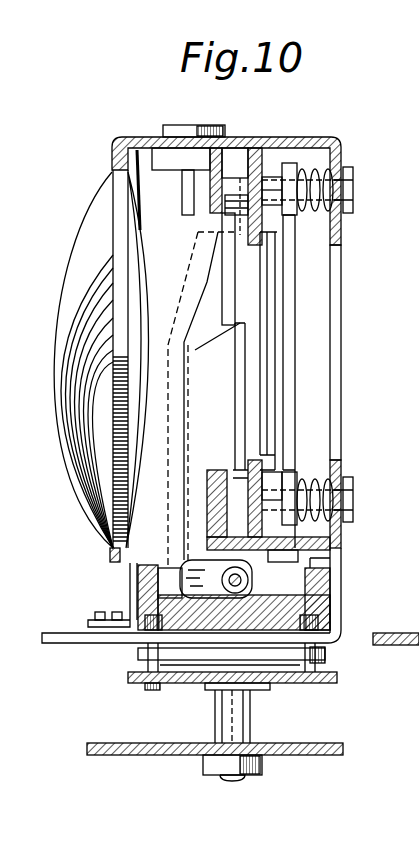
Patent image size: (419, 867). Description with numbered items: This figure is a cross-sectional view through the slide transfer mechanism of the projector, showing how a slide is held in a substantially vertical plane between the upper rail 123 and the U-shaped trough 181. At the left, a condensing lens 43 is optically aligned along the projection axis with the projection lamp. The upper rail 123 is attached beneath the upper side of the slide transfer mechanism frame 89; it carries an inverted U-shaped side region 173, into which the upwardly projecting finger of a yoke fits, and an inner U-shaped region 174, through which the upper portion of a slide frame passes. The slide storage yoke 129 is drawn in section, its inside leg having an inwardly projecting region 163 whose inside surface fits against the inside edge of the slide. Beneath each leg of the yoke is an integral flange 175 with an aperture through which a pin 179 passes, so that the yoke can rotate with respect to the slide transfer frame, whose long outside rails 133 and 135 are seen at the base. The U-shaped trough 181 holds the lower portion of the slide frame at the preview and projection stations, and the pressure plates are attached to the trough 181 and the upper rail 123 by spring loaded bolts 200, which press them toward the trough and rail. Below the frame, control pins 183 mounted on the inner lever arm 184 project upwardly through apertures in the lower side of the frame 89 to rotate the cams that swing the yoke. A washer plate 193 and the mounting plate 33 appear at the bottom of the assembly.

The mounting plate 33 is at (318, 755).
The condensing lens 43 is at (70, 470).
The slide transfer mechanism frame 89 is at (337, 163).
The upper rail 123 is at (233, 165).
The slide storage yoke 129 is at (175, 470).
The outside rail 133 is at (138, 584).
The outside rail 135 is at (325, 587).
The inwardly projecting region 163 is at (243, 300).
The inverted U-shaped side region 173 is at (201, 210).
The inner U-shaped region 174 is at (228, 215).
The flange 175 is at (193, 558).
The pin 179 is at (247, 581).
The U-shaped trough 181 is at (265, 465).
The control pin 183 is at (315, 627).
The inner lever arm 184 is at (325, 652).
The washer plate 193 is at (338, 677).
The spring loaded bolt 200 is at (352, 187).